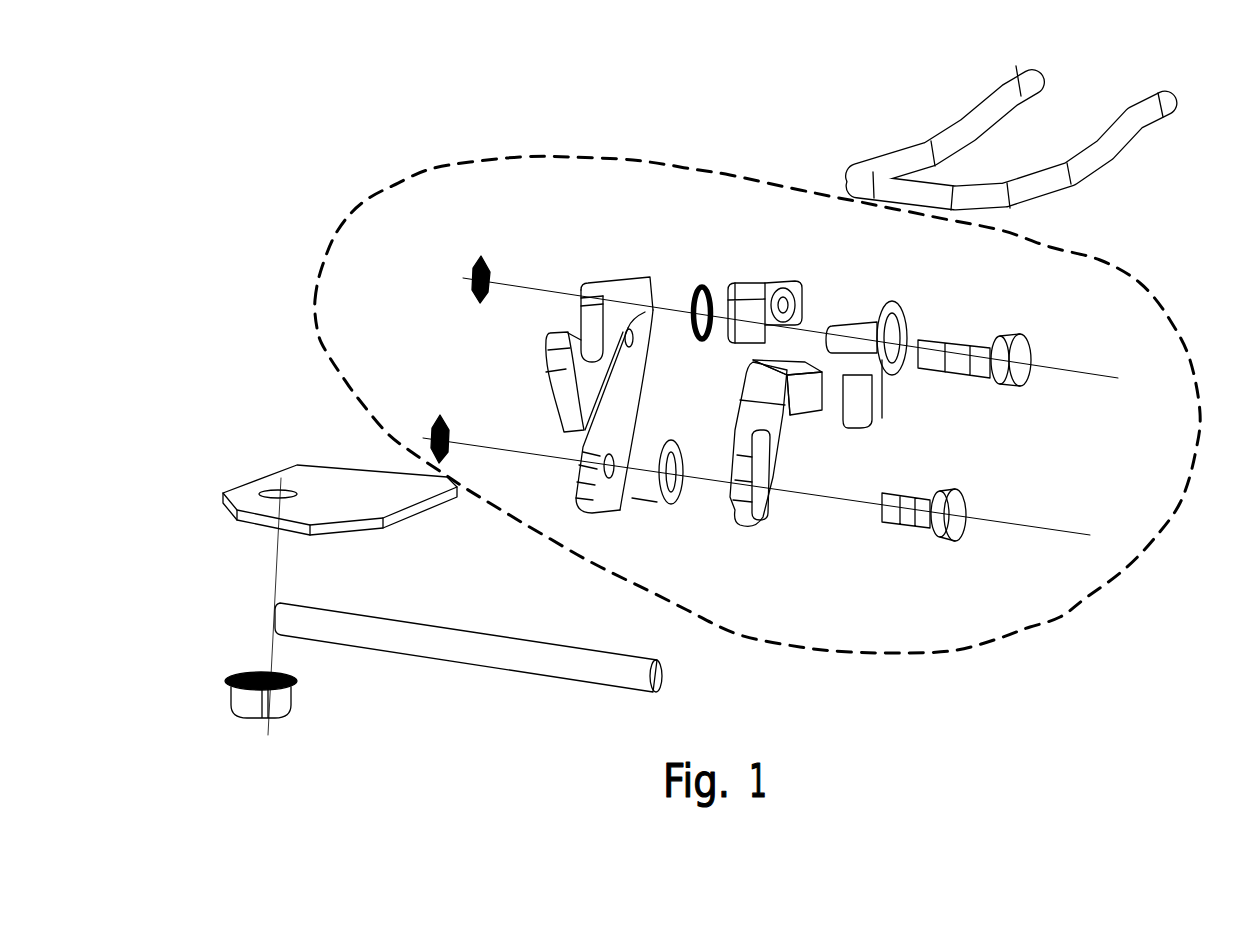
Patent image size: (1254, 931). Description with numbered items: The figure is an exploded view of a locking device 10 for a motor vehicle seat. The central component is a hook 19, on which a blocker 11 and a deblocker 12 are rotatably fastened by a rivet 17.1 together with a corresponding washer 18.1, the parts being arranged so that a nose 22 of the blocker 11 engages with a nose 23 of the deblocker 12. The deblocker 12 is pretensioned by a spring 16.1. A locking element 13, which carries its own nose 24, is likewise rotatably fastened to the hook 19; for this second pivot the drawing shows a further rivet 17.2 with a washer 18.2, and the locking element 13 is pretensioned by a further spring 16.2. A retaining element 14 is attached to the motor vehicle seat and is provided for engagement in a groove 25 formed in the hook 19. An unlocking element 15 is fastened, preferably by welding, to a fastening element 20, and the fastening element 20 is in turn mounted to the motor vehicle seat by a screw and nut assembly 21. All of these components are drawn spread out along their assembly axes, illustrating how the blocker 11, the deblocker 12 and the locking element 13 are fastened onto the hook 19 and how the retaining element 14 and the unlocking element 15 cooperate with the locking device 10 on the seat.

The locking device 10 is at (380, 196).
The blocker 11 is at (792, 467).
The deblocker 12 is at (889, 347).
The locking element 13 is at (795, 269).
The retaining element 14 is at (1033, 187).
The unlocking element 15 is at (493, 642).
The spring 16.1 is at (700, 282).
The second washer 16.2 is at (663, 507).
The rivet 17.1 is at (1017, 380).
The second screw 17.2 is at (955, 523).
The washer 18.1 is at (482, 262).
The second pin 18.2 is at (447, 420).
The hook 19 is at (620, 362).
The fastening element 20 is at (340, 600).
The screw and nut assembly 21 is at (250, 672).
The nose 22 is at (803, 417).
The nose 23 is at (885, 402).
The nose 24 is at (793, 293).
The groove 25 is at (623, 372).